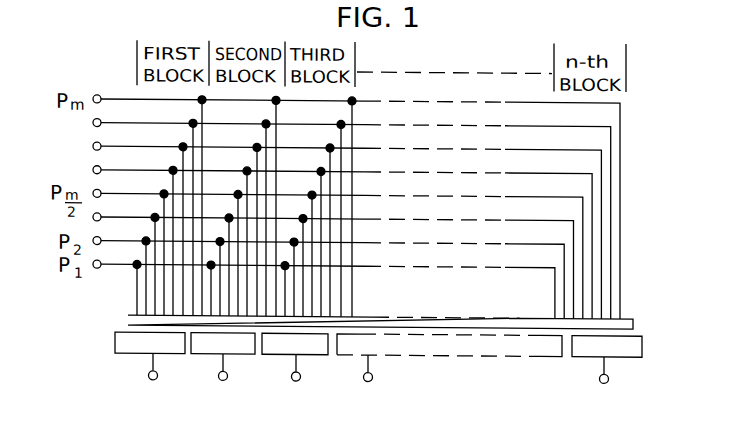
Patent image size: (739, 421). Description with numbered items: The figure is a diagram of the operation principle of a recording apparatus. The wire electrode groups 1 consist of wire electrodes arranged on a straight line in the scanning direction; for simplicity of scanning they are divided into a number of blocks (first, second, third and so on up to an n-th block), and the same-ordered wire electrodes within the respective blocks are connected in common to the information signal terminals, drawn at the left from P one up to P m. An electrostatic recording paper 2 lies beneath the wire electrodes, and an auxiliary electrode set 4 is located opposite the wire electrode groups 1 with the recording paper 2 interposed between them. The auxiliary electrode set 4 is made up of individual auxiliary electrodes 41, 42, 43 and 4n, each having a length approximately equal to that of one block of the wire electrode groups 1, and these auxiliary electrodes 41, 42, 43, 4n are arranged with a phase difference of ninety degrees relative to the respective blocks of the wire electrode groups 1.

The wire electrode groups 1 is at (130, 290).
The electrostatic recording paper 2 is at (128, 319).
The auxiliary electrode set 4 is at (115, 345).
The auxiliary electrode 41 is at (150, 356).
The auxiliary electrode 42 is at (223, 357).
The auxiliary electrode 43 is at (295, 357).
The auxiliary electrode 4n is at (607, 360).